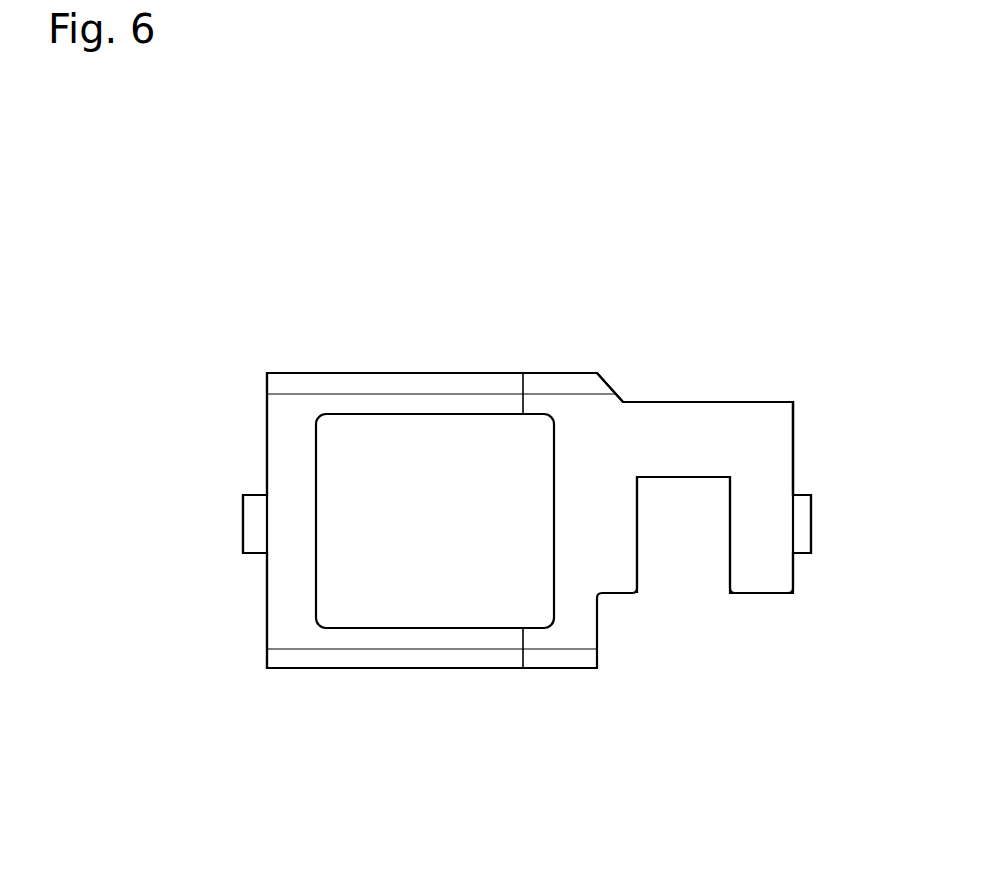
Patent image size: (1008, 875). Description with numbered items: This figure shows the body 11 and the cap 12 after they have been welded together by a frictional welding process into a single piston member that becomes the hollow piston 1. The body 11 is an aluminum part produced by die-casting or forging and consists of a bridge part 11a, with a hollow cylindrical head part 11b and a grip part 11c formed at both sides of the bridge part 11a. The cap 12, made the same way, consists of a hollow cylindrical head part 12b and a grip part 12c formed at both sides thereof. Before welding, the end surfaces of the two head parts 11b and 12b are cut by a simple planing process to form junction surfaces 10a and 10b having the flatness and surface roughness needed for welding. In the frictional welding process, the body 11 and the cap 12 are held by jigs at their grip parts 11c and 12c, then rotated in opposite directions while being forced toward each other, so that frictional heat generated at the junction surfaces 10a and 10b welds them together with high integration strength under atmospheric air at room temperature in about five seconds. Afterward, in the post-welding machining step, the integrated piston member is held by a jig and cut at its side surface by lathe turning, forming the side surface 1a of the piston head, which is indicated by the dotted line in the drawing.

The piston 1 is at (245, 705).
The side surface of a piston head 1a is at (470, 397).
The junction surface 10a is at (523, 396).
The junction surface 10b is at (523, 396).
The body 11 is at (727, 393).
The bridge part 11a is at (760, 425).
The hollow cylindrical head part 11b is at (602, 425).
The grip part 11c is at (800, 518).
The cap 12 is at (303, 368).
The hollow cylindrical head part 12b is at (342, 383).
The grip part 12c is at (257, 517).